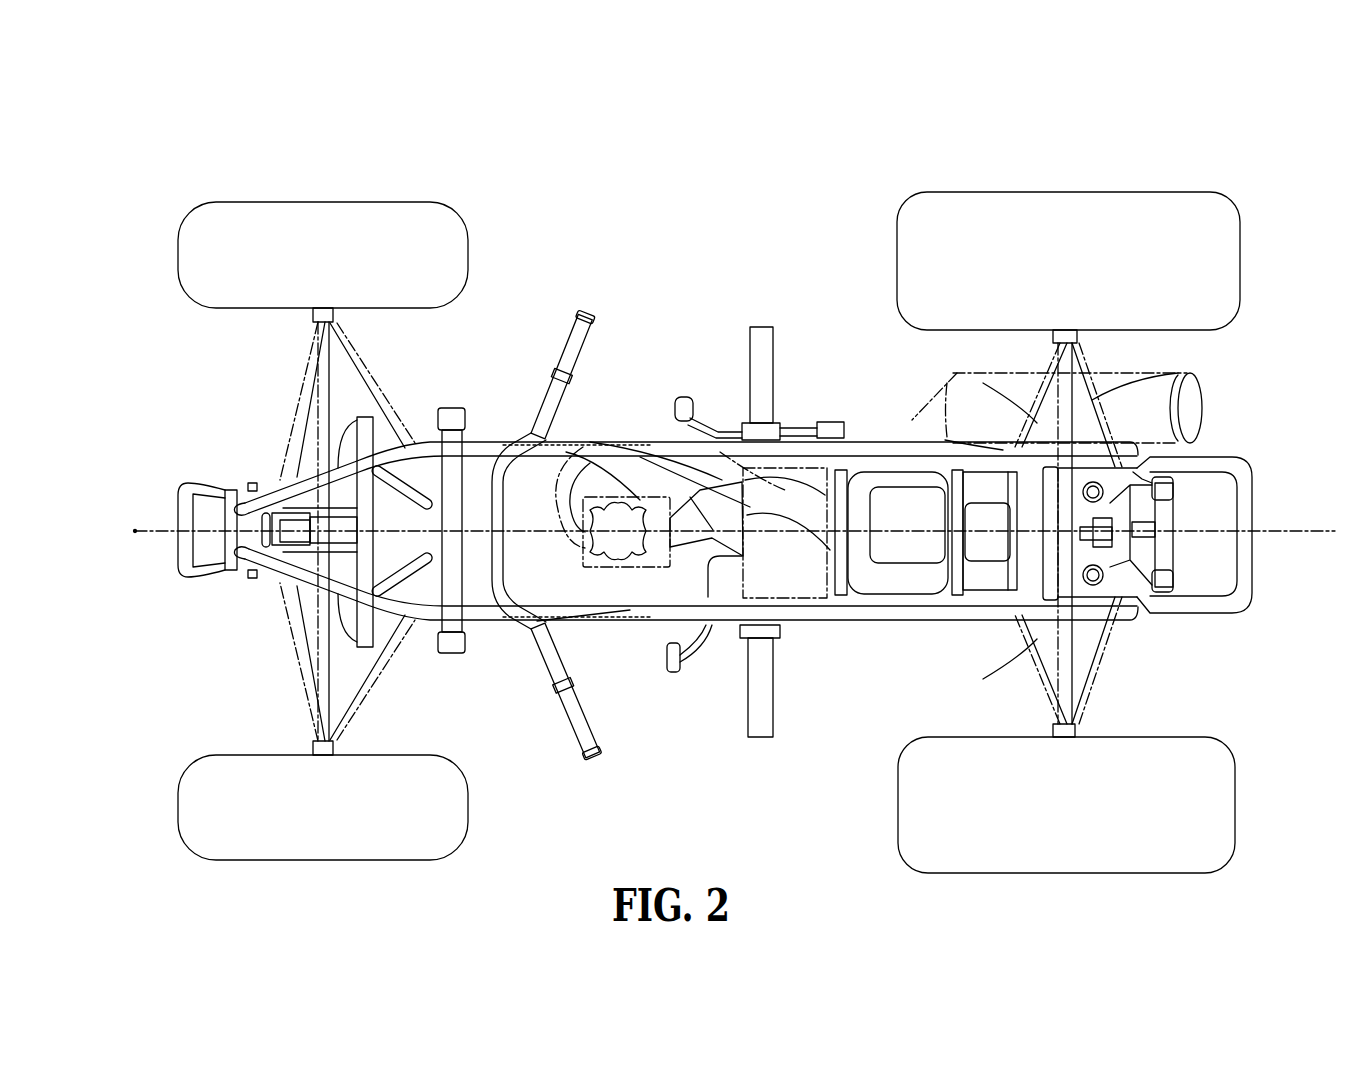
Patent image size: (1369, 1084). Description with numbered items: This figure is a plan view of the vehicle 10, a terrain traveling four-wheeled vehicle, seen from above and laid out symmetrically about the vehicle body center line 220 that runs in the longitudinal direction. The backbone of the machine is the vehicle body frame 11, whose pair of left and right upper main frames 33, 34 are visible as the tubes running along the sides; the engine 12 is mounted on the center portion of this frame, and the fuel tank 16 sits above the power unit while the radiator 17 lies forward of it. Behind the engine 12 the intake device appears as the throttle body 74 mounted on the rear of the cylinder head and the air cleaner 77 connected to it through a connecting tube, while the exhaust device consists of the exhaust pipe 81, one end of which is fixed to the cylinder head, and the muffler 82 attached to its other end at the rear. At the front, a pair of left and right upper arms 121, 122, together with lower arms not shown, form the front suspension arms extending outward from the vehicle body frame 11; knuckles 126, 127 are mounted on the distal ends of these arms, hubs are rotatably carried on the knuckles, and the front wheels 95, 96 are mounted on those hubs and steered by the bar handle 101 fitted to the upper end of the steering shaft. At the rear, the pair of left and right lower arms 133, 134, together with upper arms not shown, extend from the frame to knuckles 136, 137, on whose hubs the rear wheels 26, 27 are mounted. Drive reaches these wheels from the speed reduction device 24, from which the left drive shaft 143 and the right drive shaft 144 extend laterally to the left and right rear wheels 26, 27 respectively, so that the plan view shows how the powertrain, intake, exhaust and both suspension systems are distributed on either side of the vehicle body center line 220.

The vehicle 10 is at (190, 101).
The vehicle body frame 11 is at (267, 483).
The engine 12 is at (617, 568).
The fuel tank 16 is at (512, 440).
The radiator 17 is at (455, 400).
The speed reduction device 24 is at (1163, 518).
The rear wheel 26 is at (1060, 858).
The rear wheel 27 is at (1057, 212).
The upper main frame 33 is at (418, 630).
The upper main frame 34 is at (418, 433).
The throttle body 74 is at (700, 505).
The air cleaner 77 is at (878, 485).
The exhaust pipe 81 is at (566, 450).
The muffler 82 is at (1202, 408).
The front wheel 95 is at (318, 852).
The front wheel 96 is at (313, 228).
The bar handle 101 is at (547, 655).
The upper arm 121 is at (290, 625).
The upper arm 122 is at (293, 412).
The knuckle 126 is at (313, 748).
The knuckle 127 is at (313, 315).
The lower arm 133 is at (1100, 645).
The lower arm 134 is at (1165, 373).
The knuckle 136 is at (1075, 730).
The knuckle 137 is at (1077, 337).
The left drive shaft 143 is at (1053, 640).
The right drive shaft 144 is at (1050, 420).
The vehicle body center line 220 is at (135, 535).